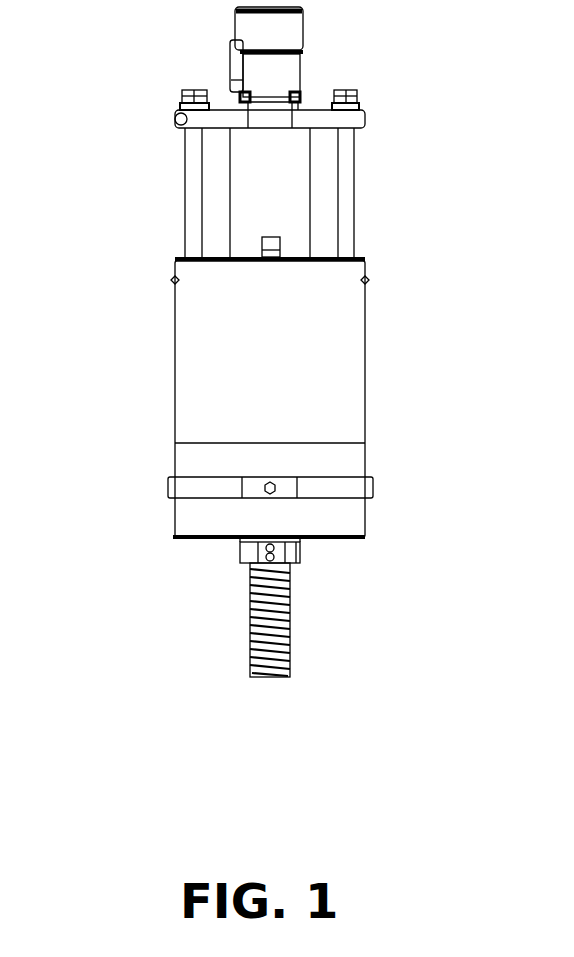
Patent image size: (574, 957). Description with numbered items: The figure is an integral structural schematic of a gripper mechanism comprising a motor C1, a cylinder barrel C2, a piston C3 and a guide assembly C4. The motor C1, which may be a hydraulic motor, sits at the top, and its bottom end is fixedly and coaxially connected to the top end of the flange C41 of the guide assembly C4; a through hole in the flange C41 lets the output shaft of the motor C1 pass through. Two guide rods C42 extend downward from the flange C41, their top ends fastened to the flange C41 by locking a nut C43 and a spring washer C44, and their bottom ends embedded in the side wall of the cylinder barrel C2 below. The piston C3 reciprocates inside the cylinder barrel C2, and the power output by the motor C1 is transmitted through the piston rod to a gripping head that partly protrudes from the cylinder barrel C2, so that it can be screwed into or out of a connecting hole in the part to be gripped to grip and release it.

The motor C1 is at (263, 70).
The cylinder barrel C2 is at (330, 343).
The piston C3 is at (270, 162).
The guide assembly C4 is at (196, 156).
The flange C41 is at (180, 118).
The guide rods C42 is at (195, 177).
The nut C43 is at (187, 93).
The spring washer C44 is at (186, 108).